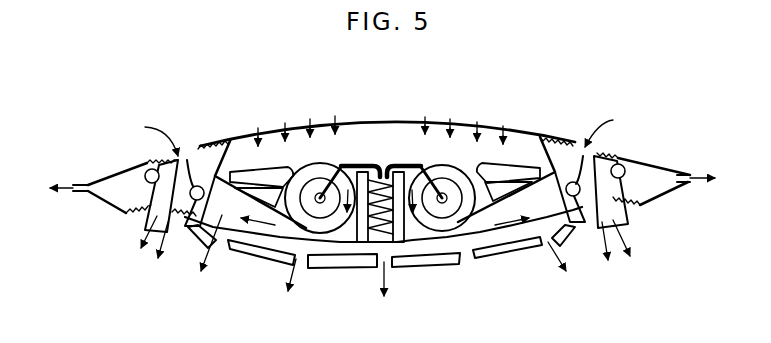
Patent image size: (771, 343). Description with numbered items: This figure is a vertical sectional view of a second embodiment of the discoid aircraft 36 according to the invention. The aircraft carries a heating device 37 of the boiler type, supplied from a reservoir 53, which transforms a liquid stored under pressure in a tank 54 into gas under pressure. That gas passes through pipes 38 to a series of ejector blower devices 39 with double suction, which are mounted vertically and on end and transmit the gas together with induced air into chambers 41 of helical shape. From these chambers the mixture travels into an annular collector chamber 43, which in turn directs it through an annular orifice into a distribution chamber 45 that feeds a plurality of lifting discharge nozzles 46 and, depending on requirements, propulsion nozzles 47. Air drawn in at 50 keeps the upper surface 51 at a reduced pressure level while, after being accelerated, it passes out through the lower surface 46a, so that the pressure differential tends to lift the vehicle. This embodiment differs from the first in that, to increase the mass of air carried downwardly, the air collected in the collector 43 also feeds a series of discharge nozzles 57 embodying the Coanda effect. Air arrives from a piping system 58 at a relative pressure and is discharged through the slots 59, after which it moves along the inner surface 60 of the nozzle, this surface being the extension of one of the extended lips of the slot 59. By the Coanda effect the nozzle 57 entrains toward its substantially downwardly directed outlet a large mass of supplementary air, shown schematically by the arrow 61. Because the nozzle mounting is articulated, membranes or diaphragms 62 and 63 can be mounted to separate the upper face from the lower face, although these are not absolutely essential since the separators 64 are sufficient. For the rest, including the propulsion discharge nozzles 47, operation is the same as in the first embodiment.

The discoid aircraft 36 is at (617, 160).
The heating device 37 is at (383, 167).
The pipes 38 is at (348, 162).
The ejector blower devices 39 is at (433, 232).
The chambers of helical shape 41 is at (307, 175).
The collector chamber 43 is at (228, 207).
The distribution chamber 45 is at (344, 256).
The lifting discharge nozzles 46 is at (379, 266).
The lower surface 46a is at (413, 268).
The propulsion nozzles 47 is at (82, 192).
The air drawn in 50 is at (567, 144).
The upper surface 51 is at (378, 122).
The reservoir 53 is at (265, 195).
The tank 54 is at (476, 166).
The Coanda-effect discharge nozzles 57 is at (597, 213).
The piping system 58 is at (152, 175).
The slots 59 is at (574, 167).
The inner surface 60 is at (589, 157).
The supplementary air 61 is at (186, 148).
The membrane or diaphragm 62 is at (572, 140).
The membrane or diaphragm 63 is at (618, 193).
The separators 64 is at (213, 151).